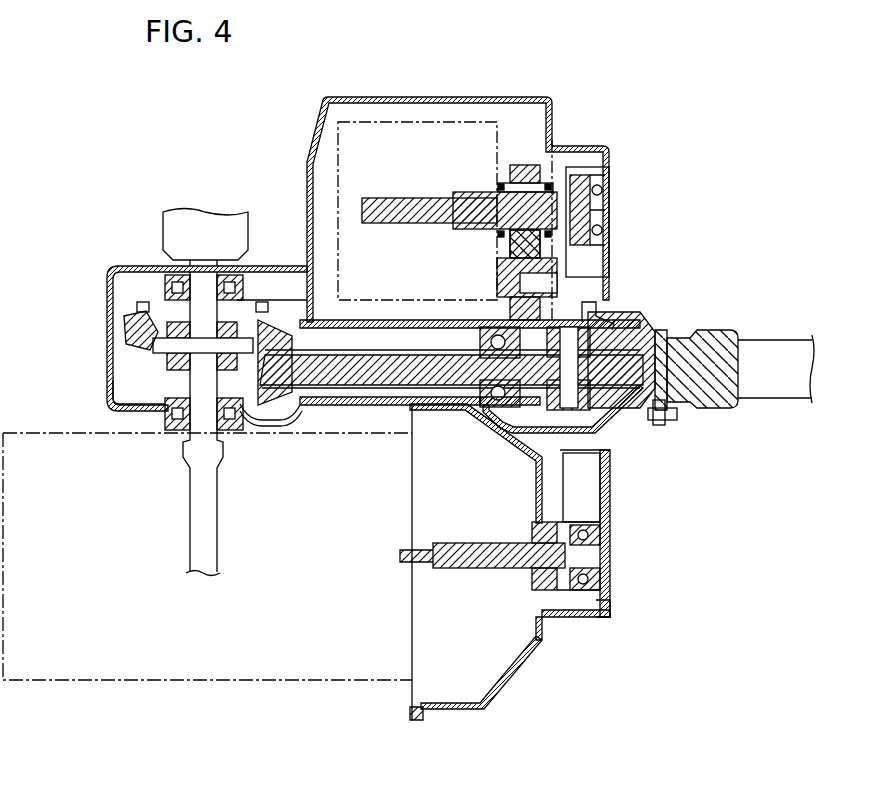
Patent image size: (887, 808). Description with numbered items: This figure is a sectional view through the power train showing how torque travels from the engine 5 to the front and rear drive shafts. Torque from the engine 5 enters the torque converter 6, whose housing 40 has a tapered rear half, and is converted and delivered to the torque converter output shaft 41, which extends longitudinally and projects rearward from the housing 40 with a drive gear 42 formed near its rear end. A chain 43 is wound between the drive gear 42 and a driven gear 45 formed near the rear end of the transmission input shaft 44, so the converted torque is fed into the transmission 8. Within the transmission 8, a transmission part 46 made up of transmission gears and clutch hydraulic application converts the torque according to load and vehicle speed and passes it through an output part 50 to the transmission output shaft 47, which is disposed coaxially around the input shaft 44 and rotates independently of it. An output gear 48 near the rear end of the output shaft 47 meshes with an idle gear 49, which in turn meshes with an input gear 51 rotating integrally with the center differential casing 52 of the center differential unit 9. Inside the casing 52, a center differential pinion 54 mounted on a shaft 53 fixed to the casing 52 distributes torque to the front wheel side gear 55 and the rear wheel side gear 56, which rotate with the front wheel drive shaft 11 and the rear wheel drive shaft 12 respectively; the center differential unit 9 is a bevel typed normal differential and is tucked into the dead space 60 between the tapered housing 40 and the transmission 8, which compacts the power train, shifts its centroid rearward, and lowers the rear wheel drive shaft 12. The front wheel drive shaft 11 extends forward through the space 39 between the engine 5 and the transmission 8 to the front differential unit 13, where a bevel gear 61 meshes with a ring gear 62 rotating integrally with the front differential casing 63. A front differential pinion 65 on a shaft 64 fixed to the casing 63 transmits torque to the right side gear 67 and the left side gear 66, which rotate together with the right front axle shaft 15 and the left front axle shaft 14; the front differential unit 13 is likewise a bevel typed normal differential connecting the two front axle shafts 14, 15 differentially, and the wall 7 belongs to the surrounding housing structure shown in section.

The engine 5 is at (127, 683).
The torque converter 6 is at (536, 664).
The housing wall 7 is at (616, 480).
The transmission 8 is at (560, 99).
The center differential unit 9 is at (612, 336).
The front wheel drive shaft 11 is at (385, 380).
The rear wheel drive shaft 12 is at (718, 330).
The front differential unit 13 is at (108, 263).
The left front axle shaft 14 is at (190, 553).
The right front axle shaft 15 is at (163, 232).
The space 39 is at (356, 346).
The housing 40 is at (488, 712).
The torque converter output shaft 41 is at (478, 570).
The drive gear 42 is at (608, 612).
The chain 43 is at (607, 530).
The transmission input shaft 44 is at (433, 196).
The driven gear 45 is at (612, 240).
The transmission part 46 is at (381, 120).
The transmission output shaft 47 is at (482, 192).
The output gear 48 is at (554, 150).
The idle gear 49 is at (512, 315).
The output part 50 is at (542, 170).
The input gear 51 is at (508, 440).
The center differential casing 52 is at (607, 416).
The shaft 53 is at (578, 322).
The center differential pinion 54 is at (592, 330).
The front wheel side gear 55 is at (529, 422).
The rear wheel side gear 56 is at (642, 322).
The space 60 is at (552, 458).
The bevel gear 61 is at (272, 418).
The ring gear 62 is at (135, 338).
The front differential casing 63 is at (115, 393).
The shaft 64 is at (152, 350).
The front differential pinion 65 is at (128, 305).
The left side gear 66 is at (237, 430).
The right side gear 67 is at (244, 285).